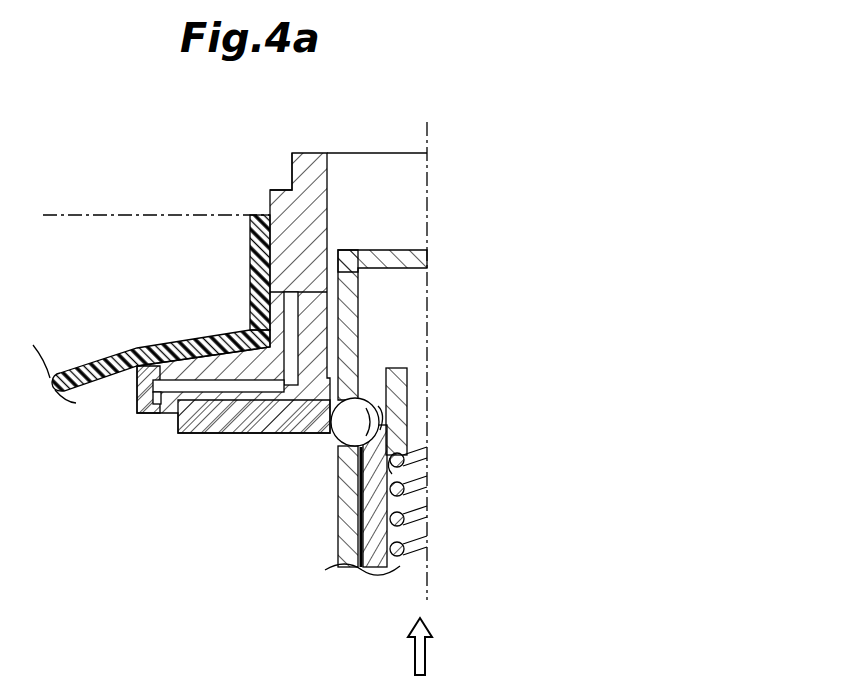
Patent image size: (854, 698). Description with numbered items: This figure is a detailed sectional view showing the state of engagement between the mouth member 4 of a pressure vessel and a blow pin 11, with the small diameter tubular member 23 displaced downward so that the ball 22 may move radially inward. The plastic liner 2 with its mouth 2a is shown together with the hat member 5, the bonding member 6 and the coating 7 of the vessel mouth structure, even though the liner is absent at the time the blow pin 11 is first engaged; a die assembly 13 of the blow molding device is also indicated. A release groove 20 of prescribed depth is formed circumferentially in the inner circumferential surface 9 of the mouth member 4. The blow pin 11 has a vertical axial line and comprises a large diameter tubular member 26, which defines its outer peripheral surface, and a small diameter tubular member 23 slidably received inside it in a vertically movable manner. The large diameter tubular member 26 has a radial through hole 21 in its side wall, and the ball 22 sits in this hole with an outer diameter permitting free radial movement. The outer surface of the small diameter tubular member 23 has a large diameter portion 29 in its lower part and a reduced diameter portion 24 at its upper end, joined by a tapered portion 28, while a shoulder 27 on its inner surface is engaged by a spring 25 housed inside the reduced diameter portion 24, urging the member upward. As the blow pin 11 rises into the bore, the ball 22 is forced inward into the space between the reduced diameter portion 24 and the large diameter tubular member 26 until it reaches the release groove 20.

The plastic liner 2 is at (162, 340).
The mouth 2a is at (258, 216).
The mouth member 4 is at (272, 186).
The hat member 5 is at (305, 155).
The bonding member 6 is at (210, 440).
The coating 7 is at (163, 415).
The inner circumferential surface 9 is at (330, 187).
The blow pin 11 is at (445, 231).
The die assembly 13 is at (120, 215).
The release groove 20 is at (280, 405).
The through hole 21 is at (338, 447).
The ball 22 is at (340, 437).
The small diameter tubular member 23 is at (407, 382).
The reduced diameter portion 24 is at (372, 380).
The spring 25 is at (430, 497).
The large diameter tubular member 26 is at (415, 260).
The shoulder 27 is at (398, 462).
The tapered portion 28 is at (368, 412).
The large diameter portion 29 is at (368, 570).